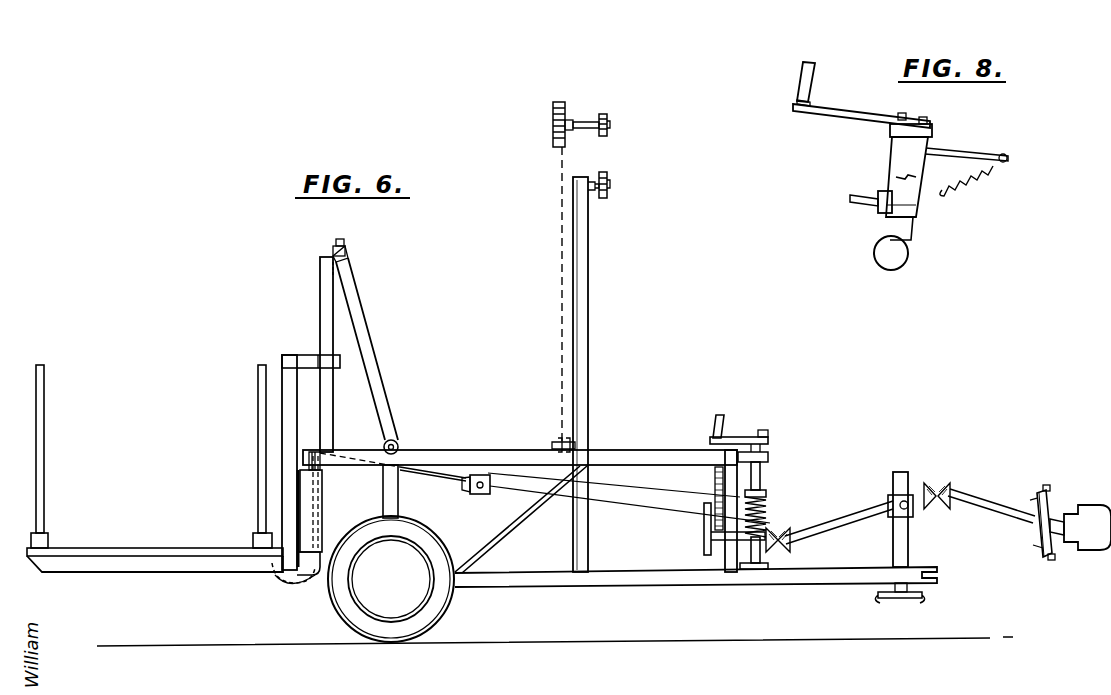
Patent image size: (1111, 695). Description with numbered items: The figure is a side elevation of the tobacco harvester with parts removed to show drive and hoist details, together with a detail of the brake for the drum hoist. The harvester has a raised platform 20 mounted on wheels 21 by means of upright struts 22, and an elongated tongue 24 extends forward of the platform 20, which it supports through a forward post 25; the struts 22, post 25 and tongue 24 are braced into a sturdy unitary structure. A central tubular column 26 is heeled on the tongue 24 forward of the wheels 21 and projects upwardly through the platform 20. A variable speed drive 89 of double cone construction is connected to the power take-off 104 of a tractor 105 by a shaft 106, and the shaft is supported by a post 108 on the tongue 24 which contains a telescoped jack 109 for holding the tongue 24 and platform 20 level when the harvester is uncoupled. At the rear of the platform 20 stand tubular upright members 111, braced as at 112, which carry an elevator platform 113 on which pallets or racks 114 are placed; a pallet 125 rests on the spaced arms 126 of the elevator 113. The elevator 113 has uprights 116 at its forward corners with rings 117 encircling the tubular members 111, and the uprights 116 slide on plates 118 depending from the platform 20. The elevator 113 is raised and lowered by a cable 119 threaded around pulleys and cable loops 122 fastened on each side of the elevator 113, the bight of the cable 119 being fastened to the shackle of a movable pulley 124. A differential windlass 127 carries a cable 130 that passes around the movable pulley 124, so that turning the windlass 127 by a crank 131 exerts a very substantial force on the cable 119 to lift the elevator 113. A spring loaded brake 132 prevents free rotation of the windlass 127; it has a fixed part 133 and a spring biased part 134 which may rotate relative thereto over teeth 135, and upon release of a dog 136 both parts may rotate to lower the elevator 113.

In FIG. 6, the raised platform 20 is at (477, 452).
In FIG. 6, the wheels 21 is at (357, 614).
In FIG. 6, the struts 22 is at (388, 500).
In FIG. 6, the tongue 24 is at (610, 587).
In FIG. 6, the forward post 25 is at (735, 578).
In FIG. 6, the central tubular column 26 is at (585, 413).
In FIG. 6, the variable speed drive 89 is at (705, 532).
In FIG. 6, the power take-off 104 is at (1078, 542).
In FIG. 6, the tractor 105 is at (812, 528).
In FIG. 6, the shaft 106 is at (1040, 512).
In FIG. 6, the post 108 is at (908, 548).
In FIG. 6, the telescoped jack 109 is at (884, 596).
In FIG. 6, the tubular upright members 111 is at (323, 300).
In FIG. 6, the brace 112 is at (368, 353).
In FIG. 6, the elevator platform 113 is at (170, 451).
In FIG. 6, the pallets or racks 114 is at (38, 442).
In FIG. 6, the uprights 116 is at (292, 356).
In FIG. 6, the rings 117 is at (340, 370).
In FIG. 6, the plates 118 is at (304, 468).
In FIG. 6, the cable 119 is at (446, 479).
In FIG. 6, the cable loops 122 is at (300, 577).
In FIG. 6, the movable pulley 124 is at (472, 495).
In FIG. 6, the pallet 125 is at (148, 548).
In FIG. 6, the spaced arms 126 is at (98, 562).
In FIG. 6, the differential windlass 127 is at (760, 489).
In FIG. 8, the differential windlass 127 is at (900, 230).
In FIG. 6, the cable 130 is at (620, 517).
In FIG. 6, the crank 131 is at (723, 420).
In FIG. 8, the crank 131 is at (798, 78).
In FIG. 8, the spring loaded brake 132 is at (932, 130).
In FIG. 8, the fixed part 133 is at (918, 212).
In FIG. 8, the spring biased part 134 is at (895, 150).
In FIG. 8, the teeth 135 is at (897, 178).
In FIG. 8, the dog 136 is at (868, 203).